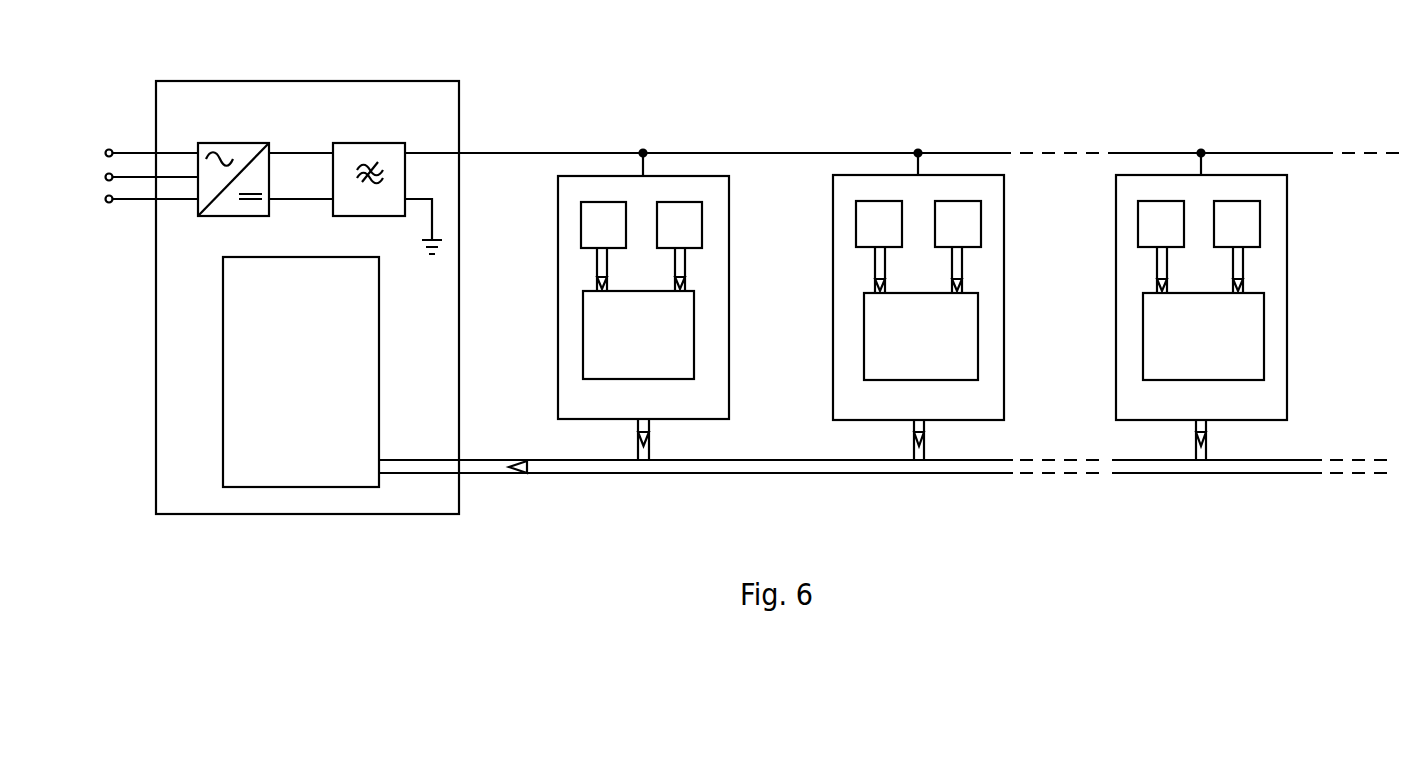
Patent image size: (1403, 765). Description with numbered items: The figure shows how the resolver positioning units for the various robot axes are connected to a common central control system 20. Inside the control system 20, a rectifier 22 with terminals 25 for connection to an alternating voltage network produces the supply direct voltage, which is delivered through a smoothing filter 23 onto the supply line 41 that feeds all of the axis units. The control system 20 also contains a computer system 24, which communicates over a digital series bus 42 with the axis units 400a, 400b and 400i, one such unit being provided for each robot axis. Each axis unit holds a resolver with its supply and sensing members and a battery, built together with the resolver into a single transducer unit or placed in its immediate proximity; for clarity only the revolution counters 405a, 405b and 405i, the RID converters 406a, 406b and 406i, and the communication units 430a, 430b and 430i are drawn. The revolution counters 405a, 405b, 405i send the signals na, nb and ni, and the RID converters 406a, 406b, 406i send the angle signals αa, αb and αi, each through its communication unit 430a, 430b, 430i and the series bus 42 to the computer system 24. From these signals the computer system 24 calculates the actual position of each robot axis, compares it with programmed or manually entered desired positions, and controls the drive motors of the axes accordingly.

The common central control system 20 is at (437, 92).
The rectifier 22 is at (253, 151).
The smoothing filter 23 is at (378, 151).
The computer system 24 is at (365, 338).
The terminals 25 is at (110, 150).
The line 41 is at (540, 153).
The digital series bus 42 is at (570, 468).
The axis unit 400a is at (631, 306).
The revolution counter 405a is at (587, 225).
The RID converter 406a is at (697, 215).
The communication unit 430a is at (592, 317).
The axis unit 400b is at (916, 306).
The revolution counter 405b is at (863, 237).
The RID converter 406b is at (978, 237).
The communication unit 430b is at (873, 340).
The axis unit 400i is at (1195, 306).
The revolution counter 405i is at (1142, 242).
The RID converter 406i is at (1253, 232).
The communication unit 430i is at (1148, 337).